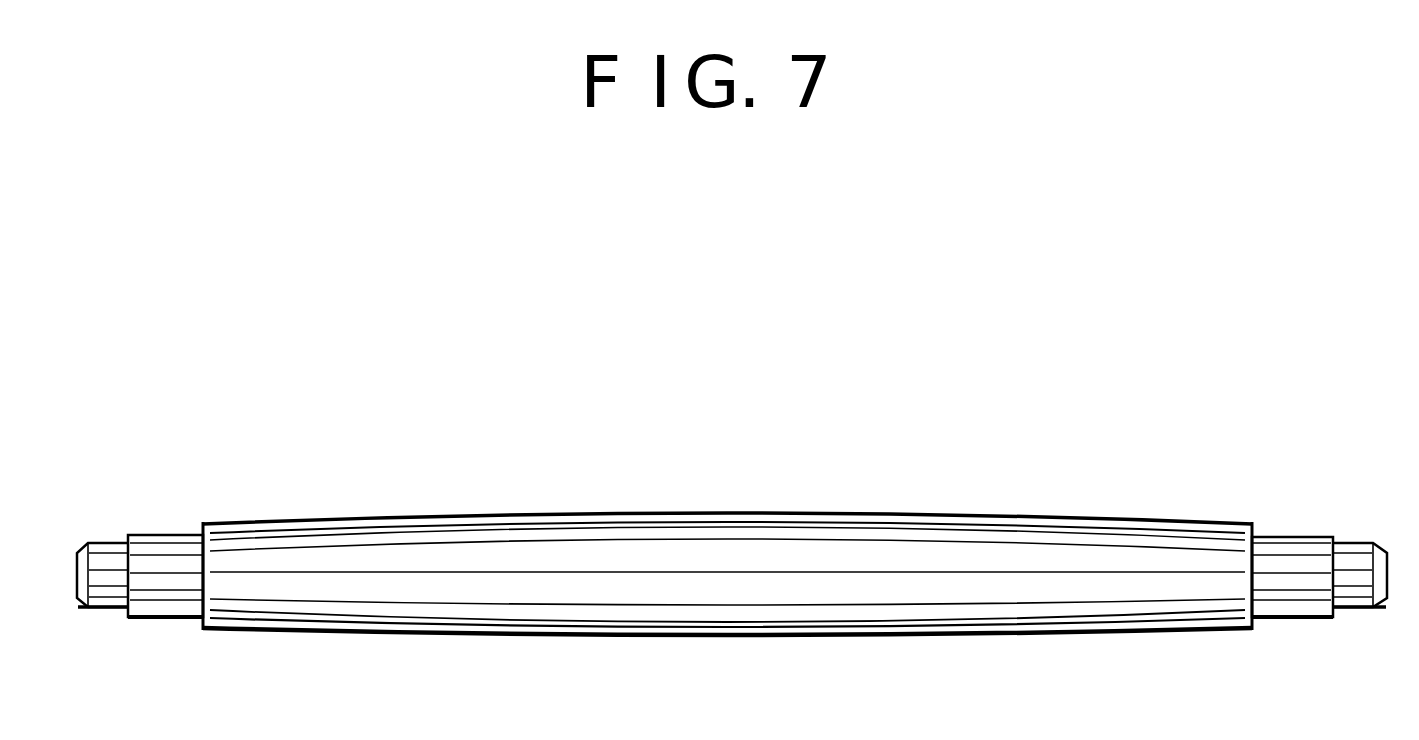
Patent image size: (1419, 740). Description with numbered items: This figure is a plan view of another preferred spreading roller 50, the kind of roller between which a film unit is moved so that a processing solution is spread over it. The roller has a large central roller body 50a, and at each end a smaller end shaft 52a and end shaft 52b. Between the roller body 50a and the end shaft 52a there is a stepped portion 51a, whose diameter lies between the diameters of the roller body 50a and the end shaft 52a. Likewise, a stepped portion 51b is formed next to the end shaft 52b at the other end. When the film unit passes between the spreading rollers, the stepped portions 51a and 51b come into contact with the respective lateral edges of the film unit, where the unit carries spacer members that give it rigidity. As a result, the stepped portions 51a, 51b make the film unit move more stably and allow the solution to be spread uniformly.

The spreading roller 50 is at (727, 480).
The roller body 50a is at (513, 532).
The stepped portion 51a is at (1287, 552).
The stepped portion 51b is at (163, 550).
The end shaft 52a is at (1358, 545).
The end shaft 52b is at (110, 552).